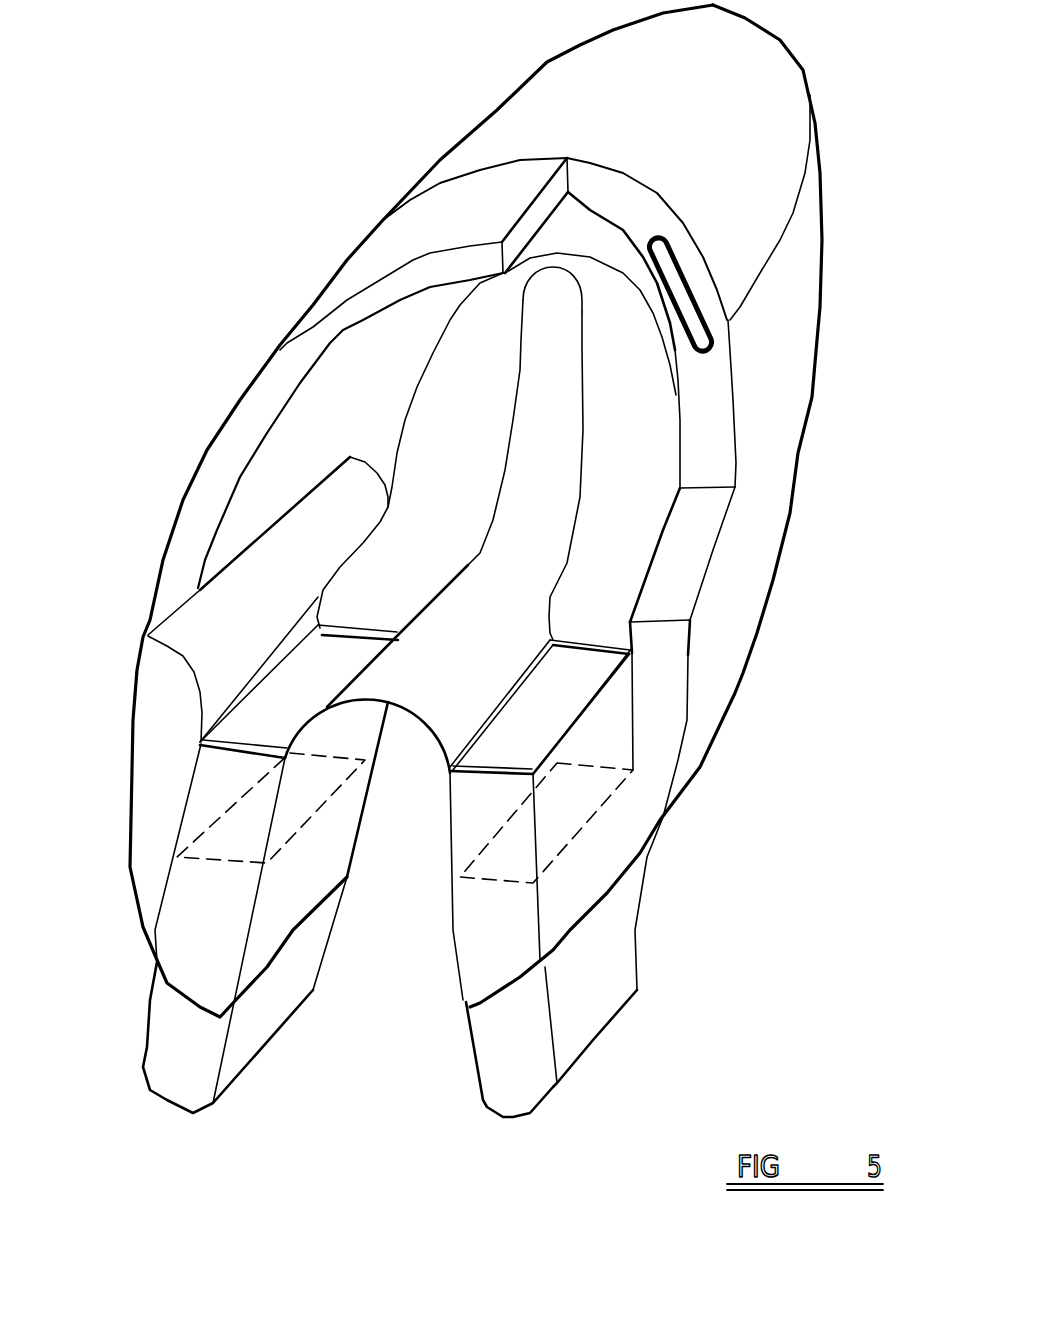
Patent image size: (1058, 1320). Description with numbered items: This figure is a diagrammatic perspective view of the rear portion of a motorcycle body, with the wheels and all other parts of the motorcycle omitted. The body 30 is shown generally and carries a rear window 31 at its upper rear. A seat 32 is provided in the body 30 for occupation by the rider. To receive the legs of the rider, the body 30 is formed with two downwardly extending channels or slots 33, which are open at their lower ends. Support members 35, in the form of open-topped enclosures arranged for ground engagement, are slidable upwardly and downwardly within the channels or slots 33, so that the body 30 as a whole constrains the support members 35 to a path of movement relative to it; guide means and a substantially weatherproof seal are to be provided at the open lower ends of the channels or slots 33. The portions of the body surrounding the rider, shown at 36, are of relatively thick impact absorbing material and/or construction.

The body 30 is at (792, 267).
The rear window 31 is at (753, 83).
The seat 32 is at (557, 447).
The channels or slots 33 is at (277, 697).
The support members 35 is at (173, 1033).
The portions surrounding the rider 36 is at (690, 578).